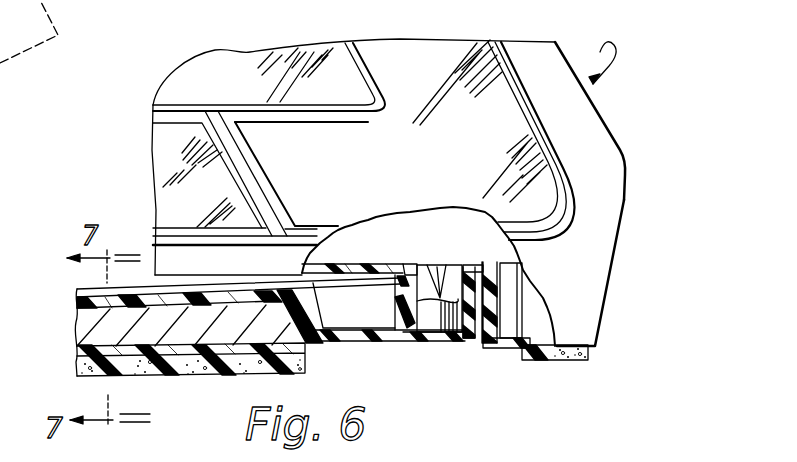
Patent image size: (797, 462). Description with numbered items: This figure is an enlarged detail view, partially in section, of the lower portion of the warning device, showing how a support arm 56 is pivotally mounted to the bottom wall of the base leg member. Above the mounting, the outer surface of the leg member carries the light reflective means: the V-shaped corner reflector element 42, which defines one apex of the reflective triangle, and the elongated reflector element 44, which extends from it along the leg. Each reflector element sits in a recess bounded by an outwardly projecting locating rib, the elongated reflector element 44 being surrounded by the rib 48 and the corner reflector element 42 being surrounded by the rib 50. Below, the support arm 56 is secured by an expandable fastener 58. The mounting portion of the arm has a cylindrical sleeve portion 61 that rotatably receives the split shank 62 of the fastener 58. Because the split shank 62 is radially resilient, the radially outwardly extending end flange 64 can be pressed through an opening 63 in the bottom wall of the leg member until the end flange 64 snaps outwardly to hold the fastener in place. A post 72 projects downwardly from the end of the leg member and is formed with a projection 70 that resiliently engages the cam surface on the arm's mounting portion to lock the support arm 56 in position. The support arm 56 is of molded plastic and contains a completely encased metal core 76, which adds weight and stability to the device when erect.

The corner reflector element 42 is at (430, 73).
The elongated reflector element 44 is at (193, 176).
The rib 48 is at (256, 105).
The rib 50 is at (567, 153).
The support arm 56 is at (78, 291).
The expandable fastener 58 is at (436, 342).
The cylindrical sleeve portion 61 is at (407, 293).
The split shank 62 is at (425, 318).
The opening 63 is at (425, 263).
The end flange 64 is at (472, 265).
The projection 70 is at (483, 348).
The post 72 is at (587, 317).
The metal core 76 is at (115, 328).